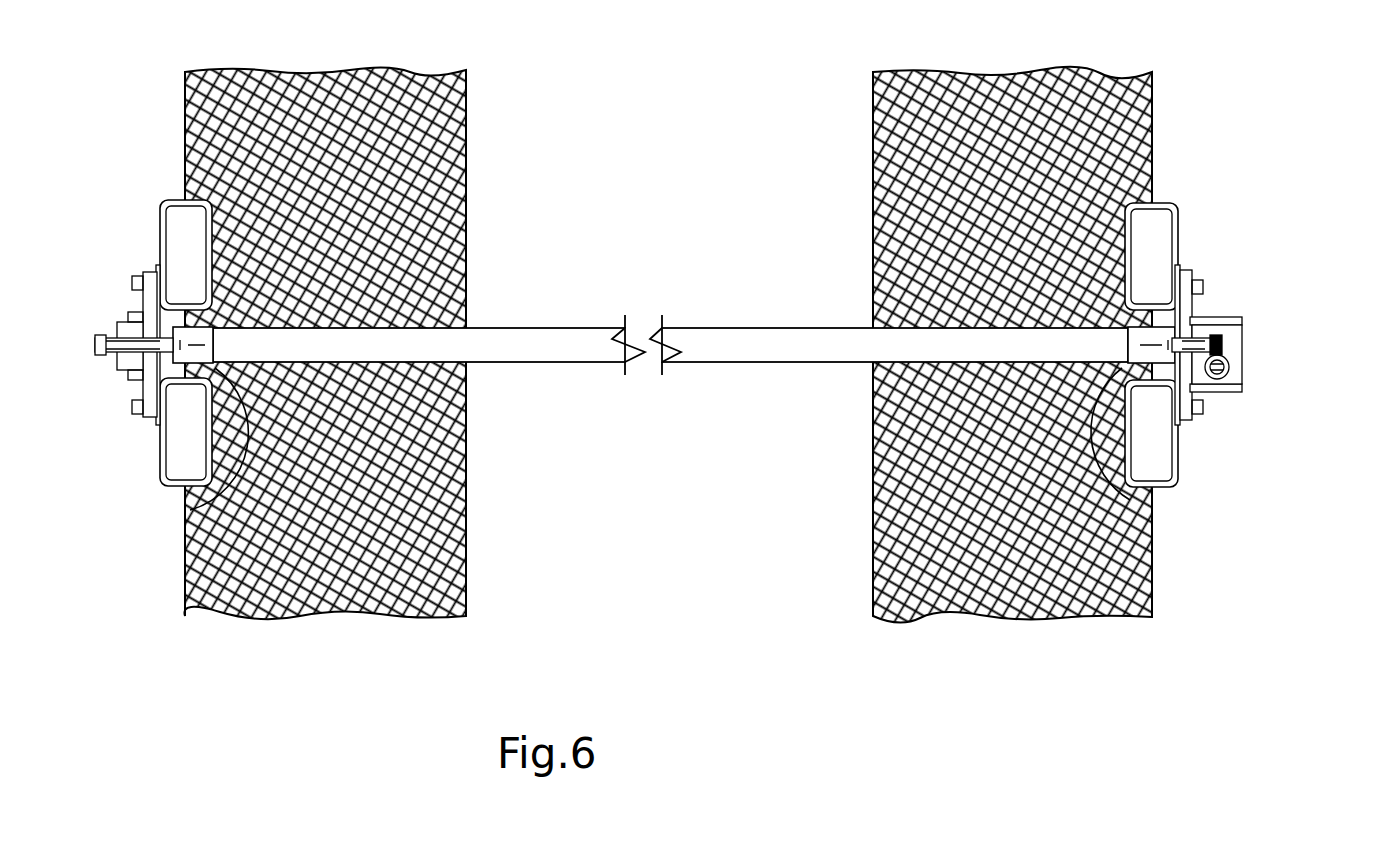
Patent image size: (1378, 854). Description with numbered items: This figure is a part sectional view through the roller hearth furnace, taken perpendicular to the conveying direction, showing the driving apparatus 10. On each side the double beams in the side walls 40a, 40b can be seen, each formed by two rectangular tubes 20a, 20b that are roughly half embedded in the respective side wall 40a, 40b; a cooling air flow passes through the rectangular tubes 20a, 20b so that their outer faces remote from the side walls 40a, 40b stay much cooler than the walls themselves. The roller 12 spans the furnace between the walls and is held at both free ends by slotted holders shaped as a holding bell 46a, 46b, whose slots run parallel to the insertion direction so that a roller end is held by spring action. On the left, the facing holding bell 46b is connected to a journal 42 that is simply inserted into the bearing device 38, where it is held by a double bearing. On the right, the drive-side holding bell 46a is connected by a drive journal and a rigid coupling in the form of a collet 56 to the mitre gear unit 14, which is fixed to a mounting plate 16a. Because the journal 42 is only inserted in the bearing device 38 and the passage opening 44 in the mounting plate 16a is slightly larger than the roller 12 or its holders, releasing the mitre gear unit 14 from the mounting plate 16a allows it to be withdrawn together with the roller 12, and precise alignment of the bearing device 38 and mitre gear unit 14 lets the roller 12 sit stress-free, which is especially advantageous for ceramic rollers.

The driving apparatus 10 is at (1240, 226).
The roller 12 is at (702, 352).
The mitre gear unit 14 is at (1237, 379).
The mounting plate 16a is at (1195, 305).
The rectangular tube 20a is at (173, 243).
The rectangular tube 20b is at (187, 455).
The bearing device 38 is at (128, 327).
The side wall 40a is at (247, 140).
The side wall 40b is at (1095, 128).
The journal 42 is at (147, 355).
The passage opening 44 is at (1197, 388).
The drive-side holding bell 46a is at (1125, 487).
The facing holding bell 46b is at (190, 507).
The collet 56 is at (1190, 315).